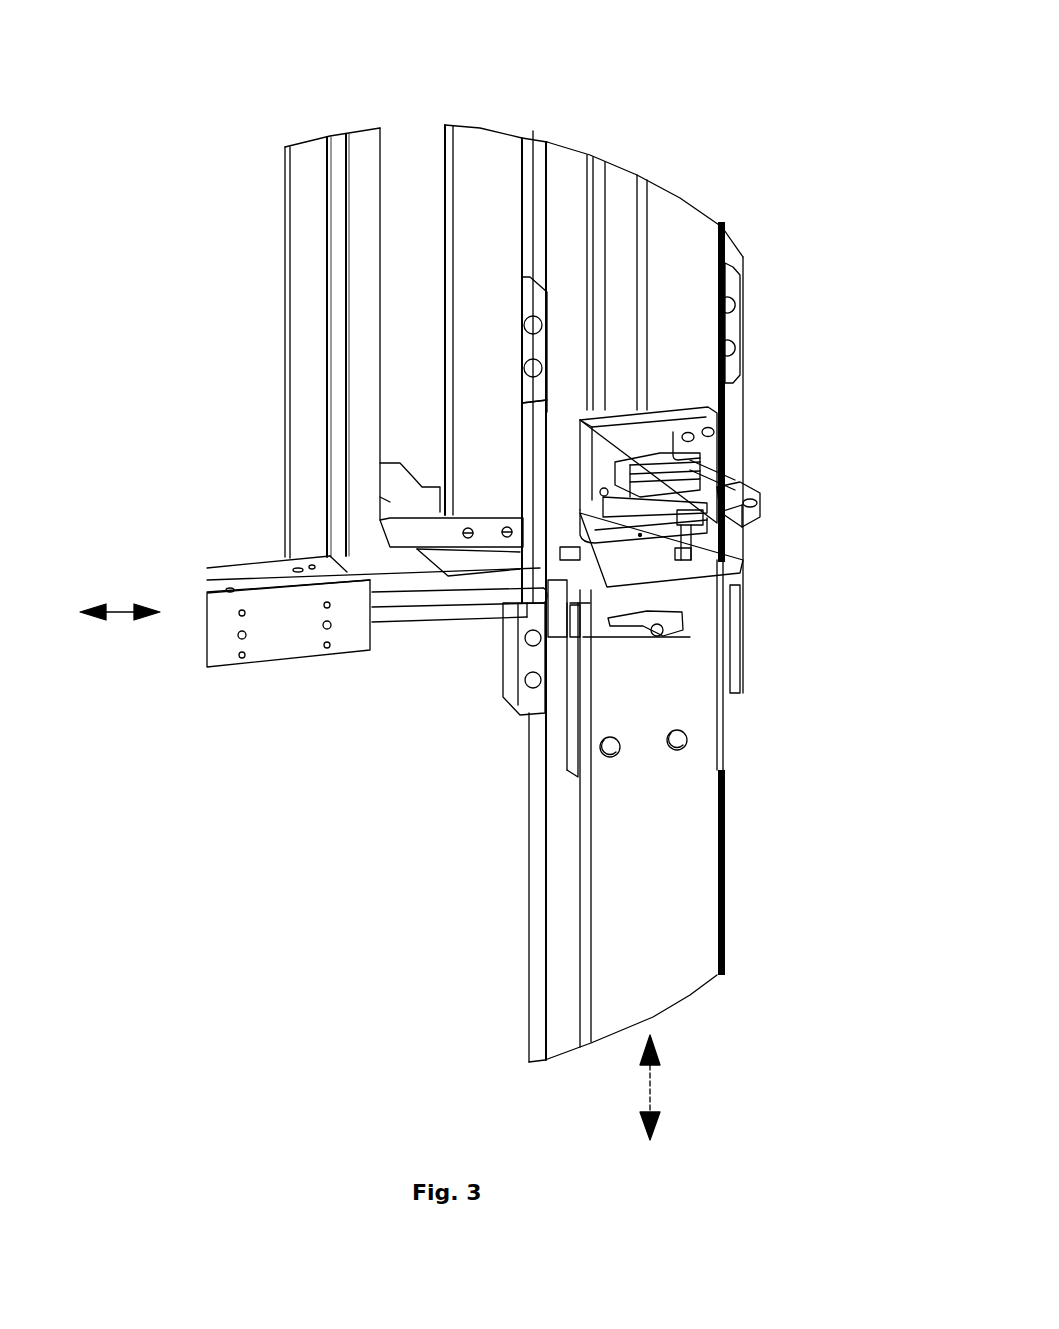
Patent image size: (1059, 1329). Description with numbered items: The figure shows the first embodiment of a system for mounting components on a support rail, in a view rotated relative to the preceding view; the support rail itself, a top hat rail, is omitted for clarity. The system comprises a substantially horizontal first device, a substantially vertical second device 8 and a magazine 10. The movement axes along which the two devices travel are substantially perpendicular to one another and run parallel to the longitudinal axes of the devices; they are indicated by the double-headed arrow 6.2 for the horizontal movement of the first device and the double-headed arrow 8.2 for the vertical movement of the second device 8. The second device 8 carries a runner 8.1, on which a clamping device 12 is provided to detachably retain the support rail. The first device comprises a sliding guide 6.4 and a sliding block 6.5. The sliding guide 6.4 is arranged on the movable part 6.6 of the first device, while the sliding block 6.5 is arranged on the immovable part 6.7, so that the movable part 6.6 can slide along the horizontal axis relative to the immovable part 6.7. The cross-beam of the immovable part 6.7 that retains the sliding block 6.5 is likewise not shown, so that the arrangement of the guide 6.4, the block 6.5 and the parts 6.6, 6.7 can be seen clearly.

The double-headed arrow 6.2 is at (124, 605).
The immovable part 6.7 is at (252, 573).
The magazine 10 is at (467, 226).
The second device 8 is at (662, 207).
The clamping device 12 is at (740, 488).
The movable part 6.6 is at (476, 605).
The sliding guide 6.4 is at (620, 598).
The sliding block 6.5 is at (640, 628).
The runner 8.1 is at (610, 825).
The double-headed arrow 8.2 is at (648, 1072).